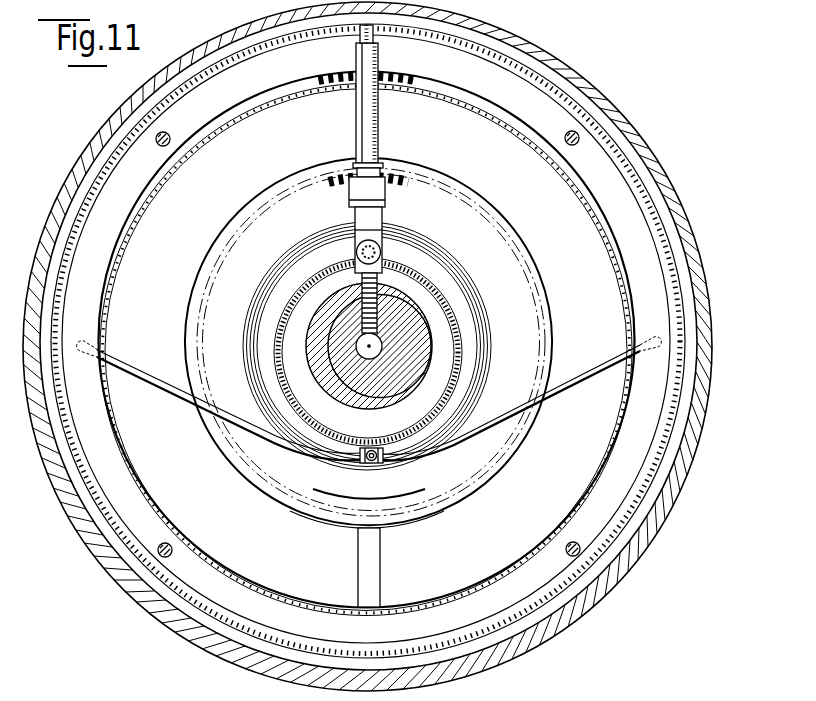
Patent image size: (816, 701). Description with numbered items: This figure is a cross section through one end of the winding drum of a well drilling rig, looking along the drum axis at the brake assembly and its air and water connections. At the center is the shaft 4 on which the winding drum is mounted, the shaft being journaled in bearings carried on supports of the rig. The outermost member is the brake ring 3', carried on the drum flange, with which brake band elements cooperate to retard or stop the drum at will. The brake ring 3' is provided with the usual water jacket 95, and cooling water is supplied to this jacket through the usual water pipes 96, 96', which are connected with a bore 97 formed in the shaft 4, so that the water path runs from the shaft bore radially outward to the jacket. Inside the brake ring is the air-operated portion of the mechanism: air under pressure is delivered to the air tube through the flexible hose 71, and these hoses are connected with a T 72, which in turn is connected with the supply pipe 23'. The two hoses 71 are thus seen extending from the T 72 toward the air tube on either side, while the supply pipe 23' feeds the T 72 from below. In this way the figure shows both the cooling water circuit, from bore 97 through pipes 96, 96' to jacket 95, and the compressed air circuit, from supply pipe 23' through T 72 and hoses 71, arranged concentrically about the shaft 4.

The brake ring 3' is at (367, 346).
The water jacket 95 is at (575, 92).
The water pipe 96 is at (393, 94).
The water pipe 96' is at (401, 248).
The bore 97 is at (382, 346).
The shaft 4 is at (400, 378).
The flexible hose 71 is at (166, 392).
The T 72 is at (381, 463).
The supply pipe 23' is at (368, 343).